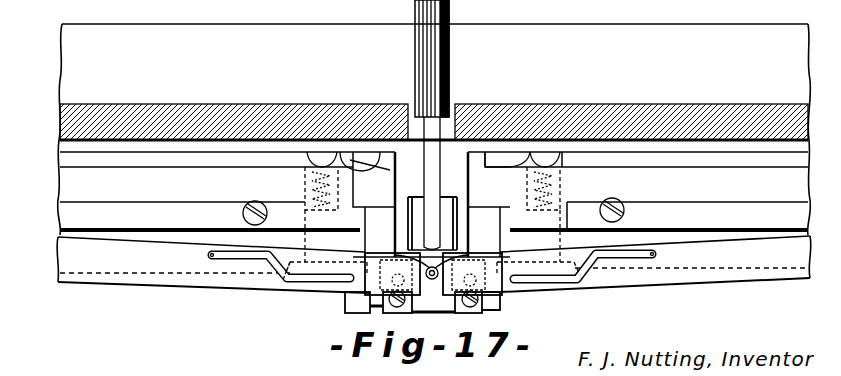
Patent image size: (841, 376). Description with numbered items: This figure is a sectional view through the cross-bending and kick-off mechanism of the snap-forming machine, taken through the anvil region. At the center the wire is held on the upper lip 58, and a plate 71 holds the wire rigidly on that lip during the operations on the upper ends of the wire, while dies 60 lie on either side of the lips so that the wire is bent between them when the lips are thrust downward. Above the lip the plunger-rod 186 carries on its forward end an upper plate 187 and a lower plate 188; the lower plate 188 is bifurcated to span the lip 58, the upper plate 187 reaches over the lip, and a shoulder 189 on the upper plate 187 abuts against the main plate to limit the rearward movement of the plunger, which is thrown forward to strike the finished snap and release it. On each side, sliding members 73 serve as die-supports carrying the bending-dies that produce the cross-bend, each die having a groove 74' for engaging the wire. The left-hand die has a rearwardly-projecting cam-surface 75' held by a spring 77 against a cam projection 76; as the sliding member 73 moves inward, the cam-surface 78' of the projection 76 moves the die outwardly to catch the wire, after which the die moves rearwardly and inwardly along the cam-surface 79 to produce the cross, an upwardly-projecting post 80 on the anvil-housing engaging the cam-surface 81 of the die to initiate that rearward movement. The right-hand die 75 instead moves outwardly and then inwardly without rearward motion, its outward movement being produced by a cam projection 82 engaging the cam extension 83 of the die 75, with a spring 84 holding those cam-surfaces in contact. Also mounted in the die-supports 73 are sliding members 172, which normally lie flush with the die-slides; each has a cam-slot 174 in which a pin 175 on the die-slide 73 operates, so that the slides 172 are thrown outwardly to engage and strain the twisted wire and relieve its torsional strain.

The plunger-rod 186 is at (449, 24).
The shoulder 189 is at (442, 128).
The cam-surface 75' is at (316, 122).
The cam-surface 78' is at (357, 126).
The cam projection 76 is at (362, 162).
The cam projection 82 is at (502, 160).
The cam extension 83 is at (556, 158).
The sliding member 73 is at (412, 184).
The spring 77 is at (305, 188).
The cam-surface 79 is at (374, 179).
The upper plate 187 is at (427, 195).
The lower plate 188 is at (440, 208).
The spring 84 is at (565, 192).
The groove 74' is at (432, 264).
The plate 71 is at (420, 244).
The upper lip 58 is at (440, 265).
The pin 175 is at (208, 256).
The sliding member 172 is at (202, 282).
The cam-slot 174 is at (283, 272).
The cam-surface 81 is at (326, 272).
The post 80 is at (350, 312).
The die 60 is at (460, 310).
The right-hand bending-die 75 is at (591, 298).